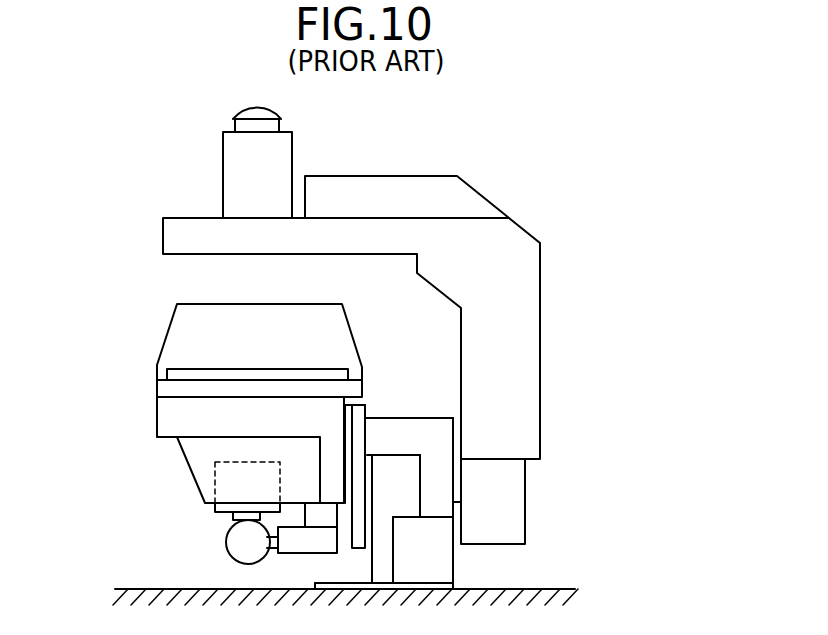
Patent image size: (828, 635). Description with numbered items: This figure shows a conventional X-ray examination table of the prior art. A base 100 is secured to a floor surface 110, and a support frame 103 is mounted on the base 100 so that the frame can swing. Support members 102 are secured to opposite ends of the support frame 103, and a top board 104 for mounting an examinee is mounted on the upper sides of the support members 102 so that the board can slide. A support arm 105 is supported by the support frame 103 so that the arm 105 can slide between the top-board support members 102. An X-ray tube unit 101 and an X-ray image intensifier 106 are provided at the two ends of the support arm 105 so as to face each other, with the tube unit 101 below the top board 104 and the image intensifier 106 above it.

The base 100 is at (453, 561).
The X-ray tube unit 101 is at (227, 543).
The support members 102 is at (157, 382).
The support frame 103 is at (185, 472).
The top board 104 is at (180, 365).
The support arm 105 is at (548, 386).
The X-ray image intensifier 106 is at (283, 147).
The floor surface 110 is at (552, 589).